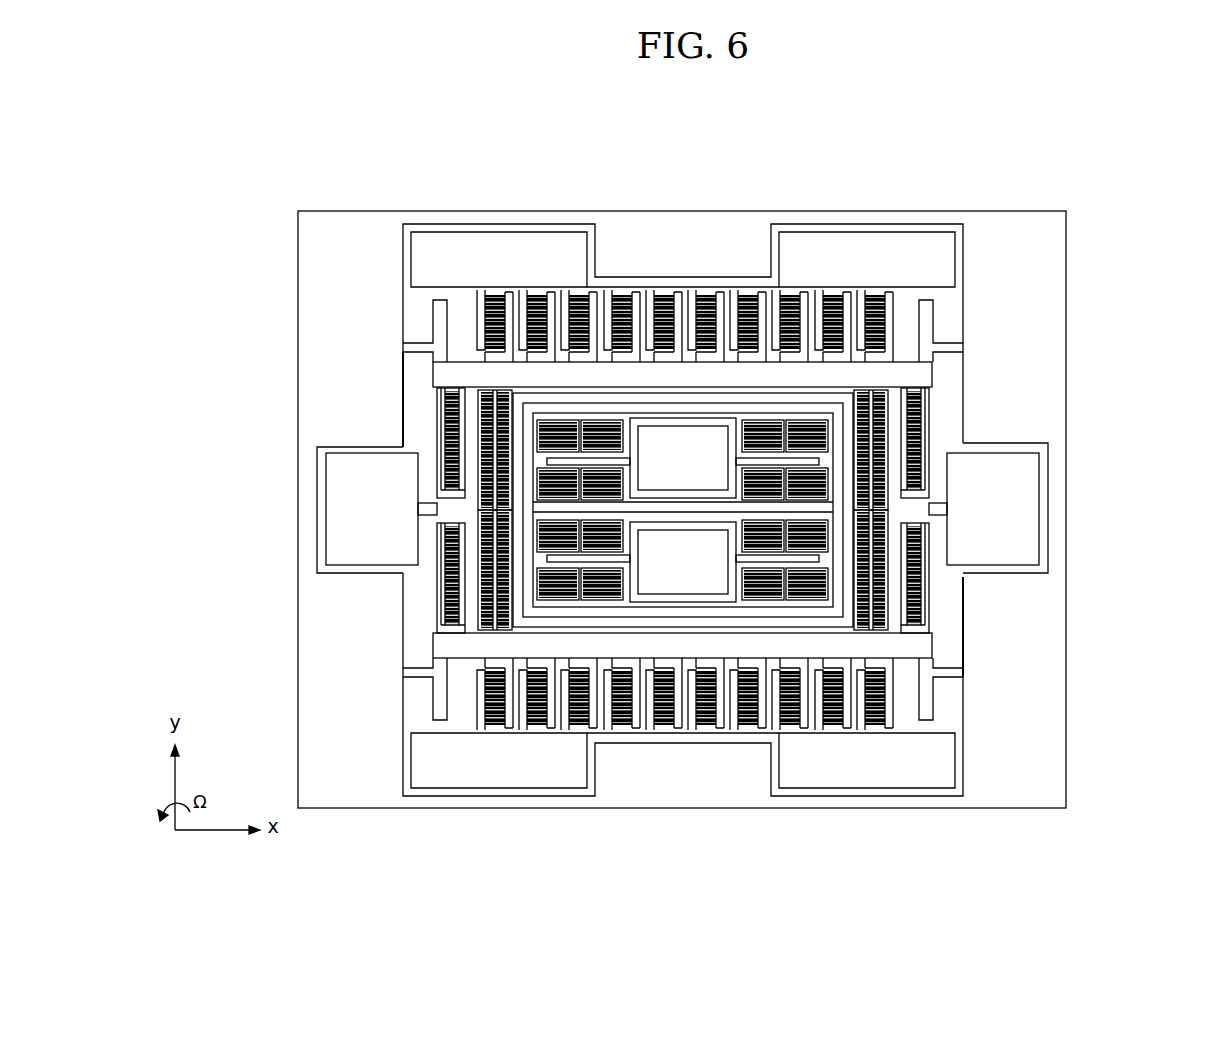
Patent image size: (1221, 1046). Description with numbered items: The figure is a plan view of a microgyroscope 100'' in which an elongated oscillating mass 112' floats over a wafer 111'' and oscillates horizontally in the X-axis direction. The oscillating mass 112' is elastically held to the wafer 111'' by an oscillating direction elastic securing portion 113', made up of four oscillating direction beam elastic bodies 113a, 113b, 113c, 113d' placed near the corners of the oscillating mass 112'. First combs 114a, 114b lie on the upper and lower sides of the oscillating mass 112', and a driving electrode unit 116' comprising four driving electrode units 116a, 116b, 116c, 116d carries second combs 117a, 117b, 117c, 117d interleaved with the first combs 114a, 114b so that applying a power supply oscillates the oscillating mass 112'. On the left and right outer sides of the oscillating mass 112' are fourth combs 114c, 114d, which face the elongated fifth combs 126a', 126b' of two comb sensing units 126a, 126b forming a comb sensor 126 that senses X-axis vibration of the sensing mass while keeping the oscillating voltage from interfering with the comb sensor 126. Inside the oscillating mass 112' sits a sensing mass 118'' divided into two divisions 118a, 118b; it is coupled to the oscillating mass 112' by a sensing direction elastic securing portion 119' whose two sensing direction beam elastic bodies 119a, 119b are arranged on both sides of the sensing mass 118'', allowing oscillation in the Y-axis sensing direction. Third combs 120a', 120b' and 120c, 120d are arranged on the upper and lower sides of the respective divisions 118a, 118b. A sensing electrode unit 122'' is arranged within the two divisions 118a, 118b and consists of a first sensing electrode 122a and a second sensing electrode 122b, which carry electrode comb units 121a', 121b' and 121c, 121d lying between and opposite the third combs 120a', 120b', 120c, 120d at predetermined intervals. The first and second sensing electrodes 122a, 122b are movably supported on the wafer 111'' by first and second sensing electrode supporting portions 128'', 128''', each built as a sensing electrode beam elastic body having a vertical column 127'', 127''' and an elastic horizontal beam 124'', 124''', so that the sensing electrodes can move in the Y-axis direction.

The microgyroscope 100'' is at (678, 484).
The wafer 111'' is at (748, 509).
The oscillating mass 112' is at (576, 525).
The oscillating direction elastic securing portion 113' is at (331, 385).
The oscillating direction beam elastic body 113a is at (925, 322).
The oscillating direction beam elastic body 113b is at (923, 710).
The oscillating direction beam elastic body 113c is at (440, 330).
The oscillating direction beam elastic body 113d' is at (331, 694).
The first comb 114a is at (696, 294).
The first comb 114b is at (627, 769).
The fourth comb 114c is at (915, 560).
The fourth comb 114d is at (437, 557).
The driving electrode unit 116' is at (700, 552).
The driving electrode unit 116a is at (858, 243).
The driving electrode unit 116b is at (860, 780).
The driving electrode unit 116c is at (458, 243).
The driving electrode unit 116d is at (457, 770).
The second comb 117a is at (880, 302).
The second comb 117b is at (880, 727).
The second comb 117c is at (485, 323).
The second comb 117d is at (470, 707).
The division of sensing mass 118a is at (480, 398).
The division of sensing mass 118b is at (538, 662).
The sensing mass 118'' is at (598, 711).
The sensing direction beam elastic body 119a is at (900, 617).
The sensing direction beam elastic body 119b is at (480, 600).
The sensing direction elastic securing portion 119' is at (1004, 627).
The third comb 120a' is at (598, 347).
The third comb 120b' is at (683, 333).
The third comb 120c is at (722, 530).
The third comb 120d is at (772, 665).
The electrode comb unit 121a' is at (774, 317).
The electrode comb unit 121b' is at (683, 372).
The electrode comb unit 121c is at (790, 625).
The electrode comb unit 121d is at (812, 655).
The first sensing electrode 122a is at (650, 470).
The second sensing electrode 122b is at (668, 660).
The sensing electrode unit 122'' is at (569, 714).
The elastic horizontal beam 124'' is at (760, 411).
The elastic horizontal beam 124''' is at (770, 586).
The comb sensor 126 is at (1068, 461).
The comb sensing unit 126a is at (1065, 509).
The fifth comb 126a' is at (1052, 461).
The comb sensing unit 126b is at (294, 509).
The fifth comb 126b' is at (324, 501).
The vertical column 127'' is at (580, 407).
The vertical column 127''' is at (621, 586).
The first sensing electrode supporting portion 128'' is at (878, 486).
The second sensing electrode supporting portion 128''' is at (999, 480).